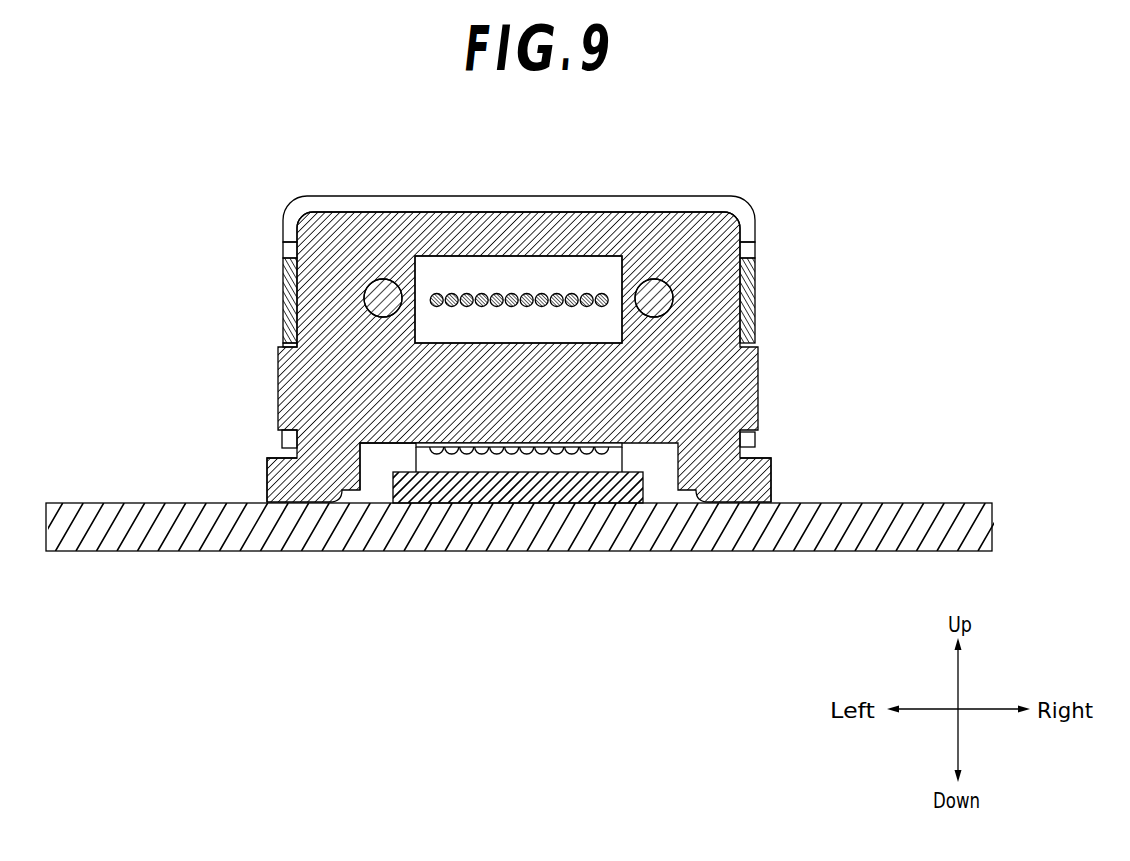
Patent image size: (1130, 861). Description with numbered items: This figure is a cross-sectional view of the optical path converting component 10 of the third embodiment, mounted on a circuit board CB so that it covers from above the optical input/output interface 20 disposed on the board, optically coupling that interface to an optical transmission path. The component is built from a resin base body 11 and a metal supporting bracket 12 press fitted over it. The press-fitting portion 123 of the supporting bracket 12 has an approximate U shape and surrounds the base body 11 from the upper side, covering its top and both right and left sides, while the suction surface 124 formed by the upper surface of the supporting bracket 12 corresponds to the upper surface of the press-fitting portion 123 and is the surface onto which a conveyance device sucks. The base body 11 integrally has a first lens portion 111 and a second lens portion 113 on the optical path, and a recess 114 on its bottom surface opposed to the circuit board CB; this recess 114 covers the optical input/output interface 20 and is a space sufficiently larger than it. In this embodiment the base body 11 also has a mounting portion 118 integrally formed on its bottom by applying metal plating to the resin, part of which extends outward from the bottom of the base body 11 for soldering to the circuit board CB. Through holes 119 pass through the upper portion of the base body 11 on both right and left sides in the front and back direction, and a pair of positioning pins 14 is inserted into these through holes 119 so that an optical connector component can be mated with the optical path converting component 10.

The optical path converting component 10 is at (453, 164).
The base body 11 is at (753, 383).
The supporting bracket 12 is at (564, 287).
The positioning pins 14 is at (372, 288).
The optical input/output interface 20 is at (507, 497).
The first lens portion 111 is at (452, 458).
The second lens portion 113 is at (514, 288).
The recess 114 is at (377, 470).
The mounting portion 118 is at (277, 483).
The through holes 119 is at (365, 300).
The press-fitting portion 123 is at (755, 225).
The suction surface 124 is at (352, 195).
The circuit board CB is at (942, 507).